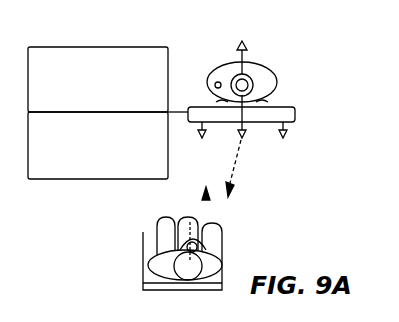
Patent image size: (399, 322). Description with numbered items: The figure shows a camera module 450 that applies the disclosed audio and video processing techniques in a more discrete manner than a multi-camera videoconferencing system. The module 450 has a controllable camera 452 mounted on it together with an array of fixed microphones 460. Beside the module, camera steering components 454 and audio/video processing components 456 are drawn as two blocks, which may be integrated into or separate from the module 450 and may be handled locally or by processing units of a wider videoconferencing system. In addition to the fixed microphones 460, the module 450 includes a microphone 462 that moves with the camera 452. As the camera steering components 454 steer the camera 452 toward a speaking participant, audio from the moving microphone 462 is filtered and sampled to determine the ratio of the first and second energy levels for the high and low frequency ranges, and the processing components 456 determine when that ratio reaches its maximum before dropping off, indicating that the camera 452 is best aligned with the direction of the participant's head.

The camera module 450 is at (295, 110).
The camera 452 is at (253, 85).
The camera steering components 454 is at (113, 47).
The audio/video processing components 456 is at (100, 180).
The array of microphones 460 is at (284, 140).
The microphone 462 is at (218, 82).